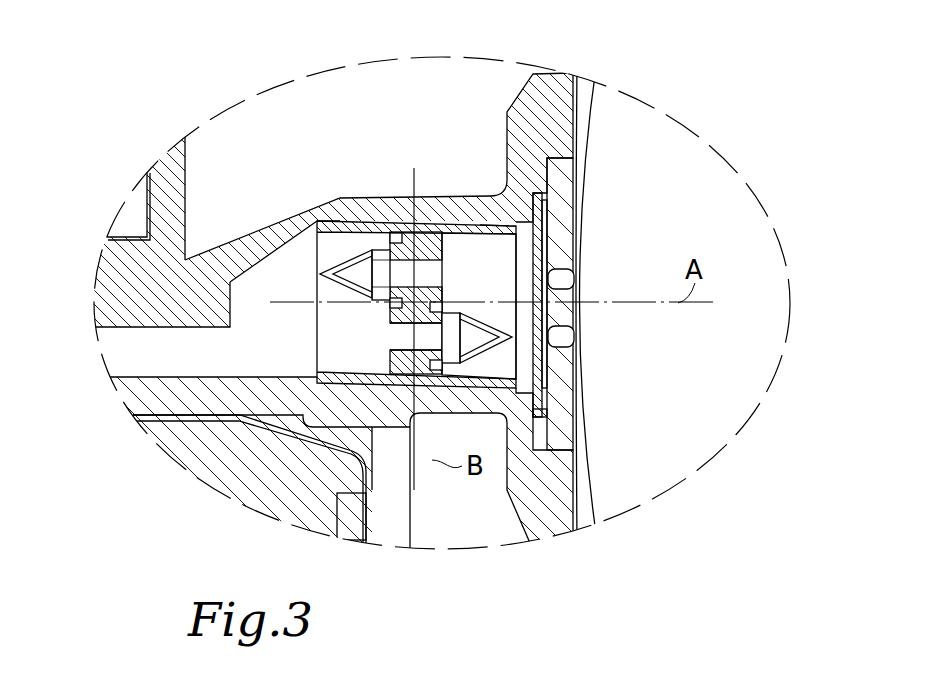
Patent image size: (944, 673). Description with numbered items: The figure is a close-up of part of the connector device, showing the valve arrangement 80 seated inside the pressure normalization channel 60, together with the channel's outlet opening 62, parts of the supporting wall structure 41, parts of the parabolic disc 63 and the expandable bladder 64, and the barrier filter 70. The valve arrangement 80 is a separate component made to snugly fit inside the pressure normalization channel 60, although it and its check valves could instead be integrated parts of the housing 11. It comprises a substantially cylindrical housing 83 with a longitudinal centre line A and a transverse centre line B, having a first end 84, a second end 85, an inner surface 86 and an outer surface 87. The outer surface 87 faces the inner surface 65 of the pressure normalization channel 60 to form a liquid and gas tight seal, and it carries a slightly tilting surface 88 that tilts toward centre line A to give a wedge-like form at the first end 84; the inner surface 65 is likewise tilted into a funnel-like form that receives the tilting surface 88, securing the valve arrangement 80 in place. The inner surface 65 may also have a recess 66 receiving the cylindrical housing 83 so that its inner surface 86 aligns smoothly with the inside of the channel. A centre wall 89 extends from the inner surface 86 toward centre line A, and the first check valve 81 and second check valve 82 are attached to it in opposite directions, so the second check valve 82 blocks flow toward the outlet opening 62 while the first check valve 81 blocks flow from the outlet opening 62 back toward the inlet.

The housing 11 is at (309, 172).
The supporting wall structure 41 is at (150, 396).
The pressure normalization channel 60 is at (112, 340).
The outlet opening 62 is at (526, 253).
The parabolic disc 63 is at (547, 90).
The expandable bladder 64 is at (597, 108).
The inner surface 65 is at (414, 170).
The recess 66 is at (290, 222).
The barrier filter 70 is at (537, 325).
The valve arrangement 80 is at (423, 254).
The first check valve 81 is at (517, 366).
The second check valve 82 is at (317, 290).
The cylindrical housing 83 is at (425, 255).
The first end 84 is at (318, 350).
The second end 85 is at (517, 287).
The inner surface 86 is at (479, 306).
The outer surface 87 is at (480, 258).
The tilting surface 88 is at (322, 441).
The centre wall 89 is at (392, 326).